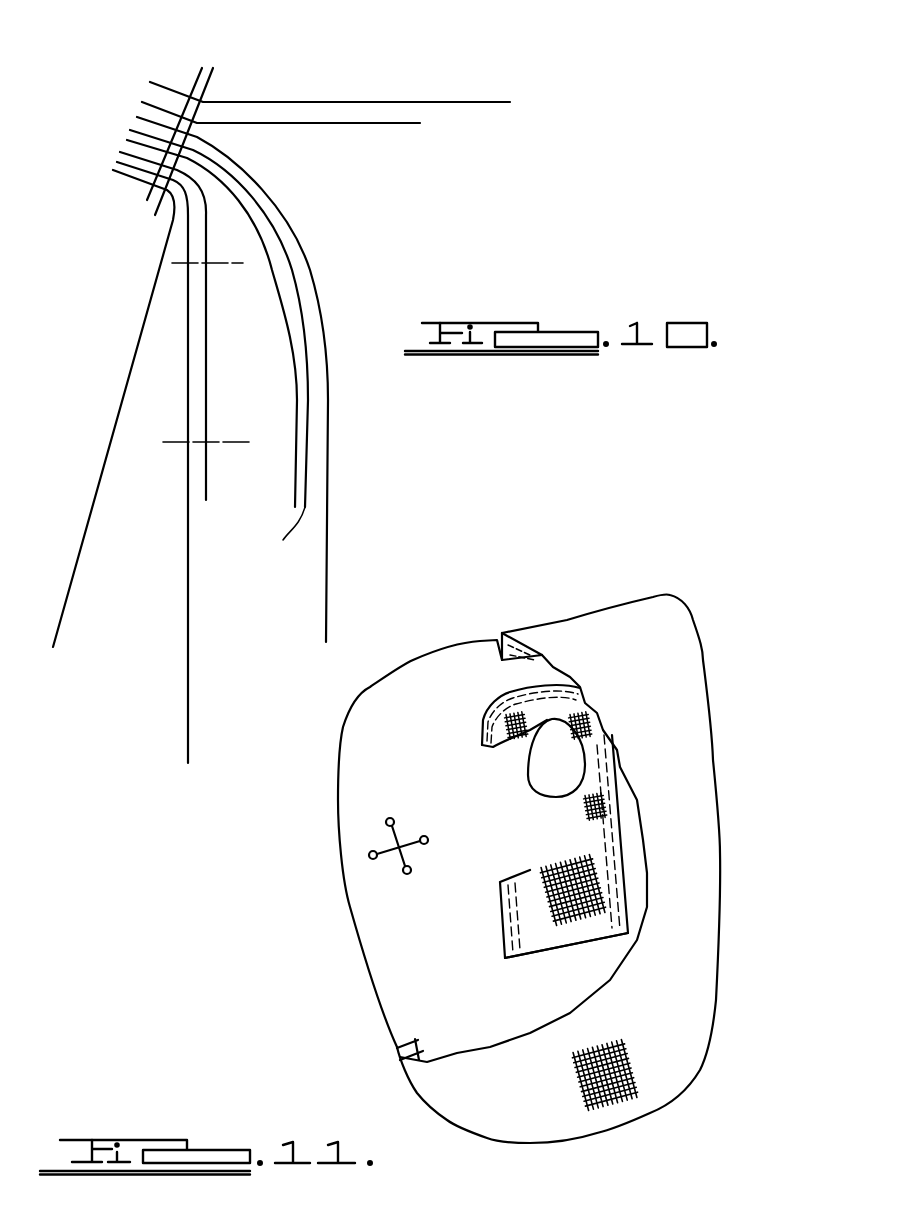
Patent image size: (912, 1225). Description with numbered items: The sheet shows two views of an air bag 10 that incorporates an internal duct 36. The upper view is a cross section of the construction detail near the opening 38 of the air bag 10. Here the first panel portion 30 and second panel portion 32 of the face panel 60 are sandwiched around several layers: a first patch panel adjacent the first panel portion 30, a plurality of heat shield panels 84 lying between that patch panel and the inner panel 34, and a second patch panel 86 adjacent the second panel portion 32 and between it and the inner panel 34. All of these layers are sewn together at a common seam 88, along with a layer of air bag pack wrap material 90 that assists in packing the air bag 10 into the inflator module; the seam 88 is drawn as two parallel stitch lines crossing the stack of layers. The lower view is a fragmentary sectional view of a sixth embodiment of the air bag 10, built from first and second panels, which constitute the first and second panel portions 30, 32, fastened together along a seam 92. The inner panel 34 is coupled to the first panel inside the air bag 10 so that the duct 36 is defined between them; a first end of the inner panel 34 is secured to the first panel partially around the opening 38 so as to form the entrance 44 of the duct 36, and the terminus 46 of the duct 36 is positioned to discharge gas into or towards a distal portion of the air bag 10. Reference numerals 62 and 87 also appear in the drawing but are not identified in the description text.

In FIG. 11, the air bag 10 is at (753, 781).
In FIG. 10, the first panel portion 30 is at (189, 677).
In FIG. 11, the first panel portion 30 is at (425, 693).
In FIG. 10, the second panel portion 32 is at (313, 101).
In FIG. 11, the second panel portion 32 is at (660, 657).
In FIG. 10, the inner panel 34 is at (328, 558).
In FIG. 11, the inner panel 34 is at (562, 941).
In FIG. 11, the internal duct 36 is at (523, 859).
In FIG. 11, the opening 38 is at (577, 776).
In FIG. 11, the entrance 44 is at (512, 768).
In FIG. 11, the terminus 46 is at (539, 960).
In FIG. 10, the face panel 60 is at (313, 410).
In FIG. 11, the fastening points 62 is at (375, 843).
In FIG. 10, the heat shield panels 84 is at (294, 508).
In FIG. 10, the second patch panel 86 is at (347, 125).
In FIG. 10, the inner wall 87 is at (207, 360).
In FIG. 10, the common seam 88 is at (212, 56).
In FIG. 10, the air bag pack wrap material 90 is at (80, 548).
In FIG. 11, the seam 92 is at (403, 1034).